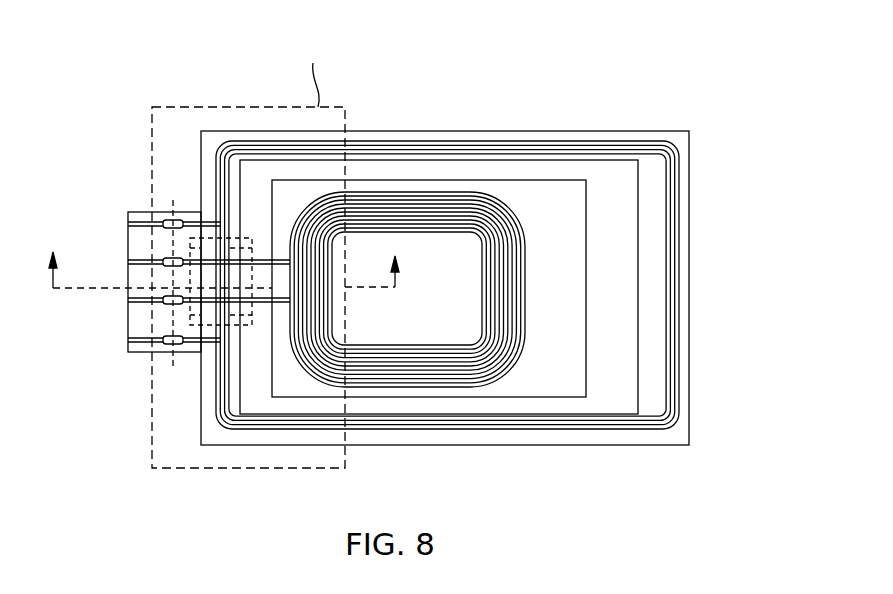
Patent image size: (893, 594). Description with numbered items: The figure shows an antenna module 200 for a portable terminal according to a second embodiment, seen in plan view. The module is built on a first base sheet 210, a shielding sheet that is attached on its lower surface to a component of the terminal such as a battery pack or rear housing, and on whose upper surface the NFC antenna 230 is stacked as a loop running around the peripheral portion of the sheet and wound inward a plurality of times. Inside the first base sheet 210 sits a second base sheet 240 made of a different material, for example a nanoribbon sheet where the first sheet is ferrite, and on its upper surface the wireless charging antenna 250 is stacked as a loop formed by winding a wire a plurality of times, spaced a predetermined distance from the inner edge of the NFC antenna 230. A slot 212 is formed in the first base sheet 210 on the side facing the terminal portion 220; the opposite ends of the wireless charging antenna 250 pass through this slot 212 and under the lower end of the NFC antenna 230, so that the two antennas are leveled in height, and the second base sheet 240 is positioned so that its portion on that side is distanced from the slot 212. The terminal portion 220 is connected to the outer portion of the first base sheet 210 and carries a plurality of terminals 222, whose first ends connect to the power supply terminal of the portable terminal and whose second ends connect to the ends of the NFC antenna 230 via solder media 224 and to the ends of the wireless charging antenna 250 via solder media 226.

The antenna module 200 is at (678, 100).
The first base sheet 210 is at (689, 192).
The slot 212 is at (252, 238).
The terminal portion 220 is at (137, 352).
The terminals 222 is at (128, 226).
The solder media 224 is at (173, 212).
The solder media 226 is at (163, 298).
The NFC antenna 230 is at (675, 316).
The second base sheet 240 is at (573, 360).
The wireless charging antenna 250 is at (395, 198).